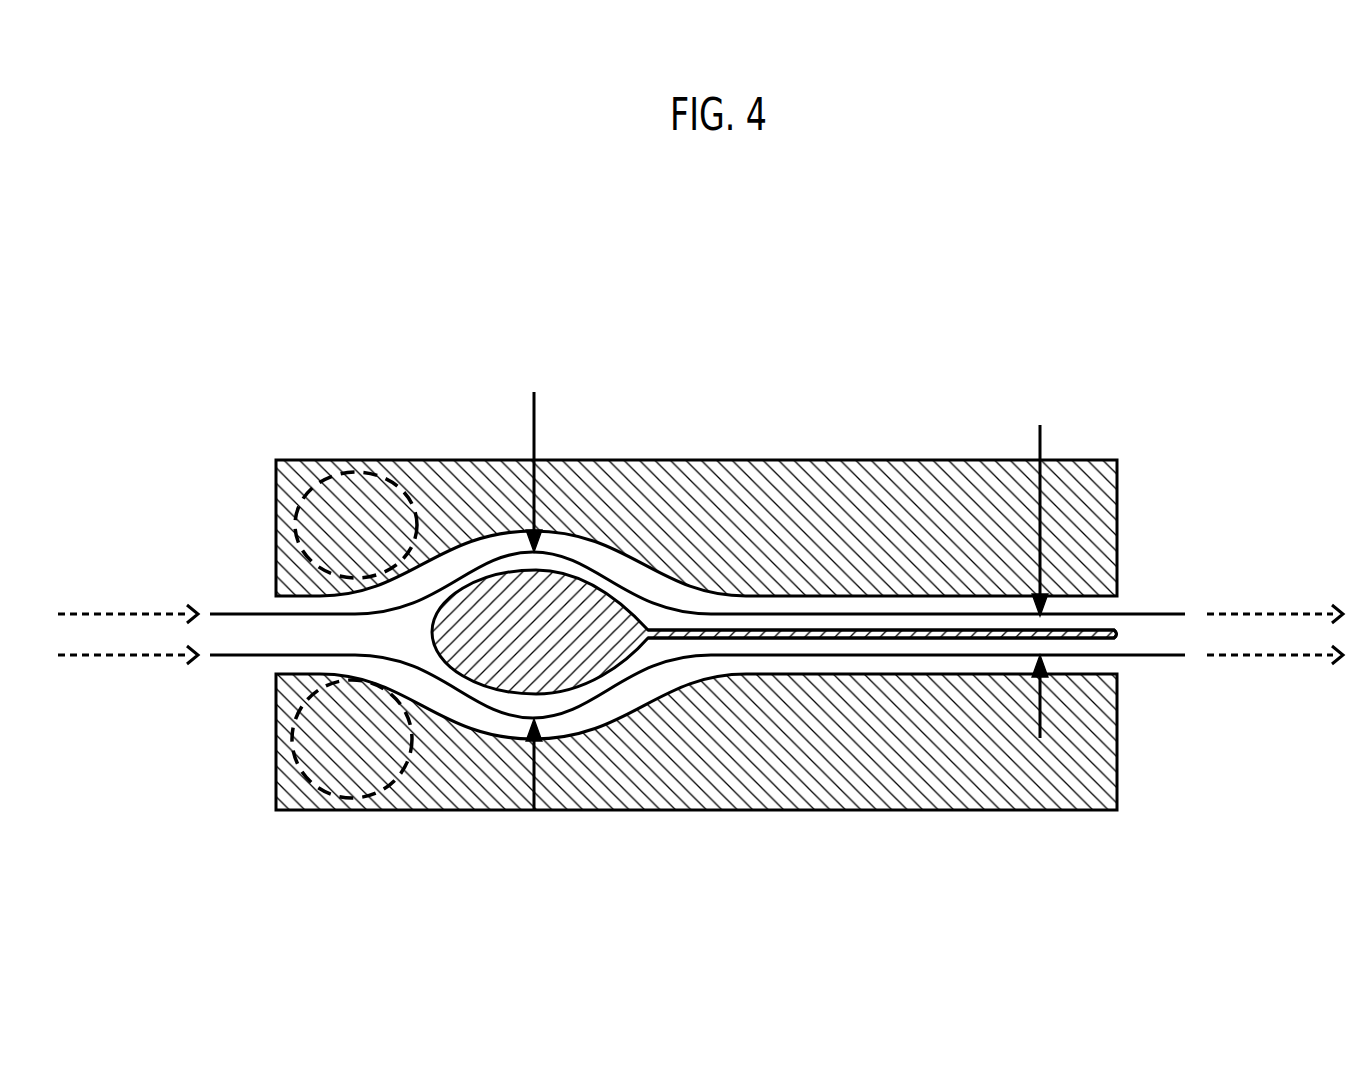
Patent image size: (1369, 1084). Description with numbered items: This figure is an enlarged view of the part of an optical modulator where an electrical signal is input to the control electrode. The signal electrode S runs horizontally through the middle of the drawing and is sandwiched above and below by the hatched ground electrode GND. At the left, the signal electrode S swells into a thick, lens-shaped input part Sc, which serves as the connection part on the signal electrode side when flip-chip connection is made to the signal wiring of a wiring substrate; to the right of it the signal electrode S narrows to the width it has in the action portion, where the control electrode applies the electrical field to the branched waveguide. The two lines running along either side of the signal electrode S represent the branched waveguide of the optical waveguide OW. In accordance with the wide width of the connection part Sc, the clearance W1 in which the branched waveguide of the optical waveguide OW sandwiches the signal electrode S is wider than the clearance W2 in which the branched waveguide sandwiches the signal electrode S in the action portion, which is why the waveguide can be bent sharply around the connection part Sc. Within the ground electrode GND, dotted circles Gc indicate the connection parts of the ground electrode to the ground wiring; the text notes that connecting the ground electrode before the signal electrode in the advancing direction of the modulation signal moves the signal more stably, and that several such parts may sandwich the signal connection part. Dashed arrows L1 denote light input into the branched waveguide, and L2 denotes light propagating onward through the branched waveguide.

The ground electrode GND is at (828, 490).
The optical waveguide OW is at (1158, 614).
The input part of the signal electrode Sc is at (553, 650).
The signal electrode S is at (833, 638).
The connection part of the ground electrode Gc is at (297, 763).
The clearance at the connection part W1 is at (533, 581).
The clearance in the action portion W2 is at (1039, 564).
The light input into the branched waveguide L1 is at (128, 620).
The light propagating through the branched waveguide L2 is at (1275, 620).